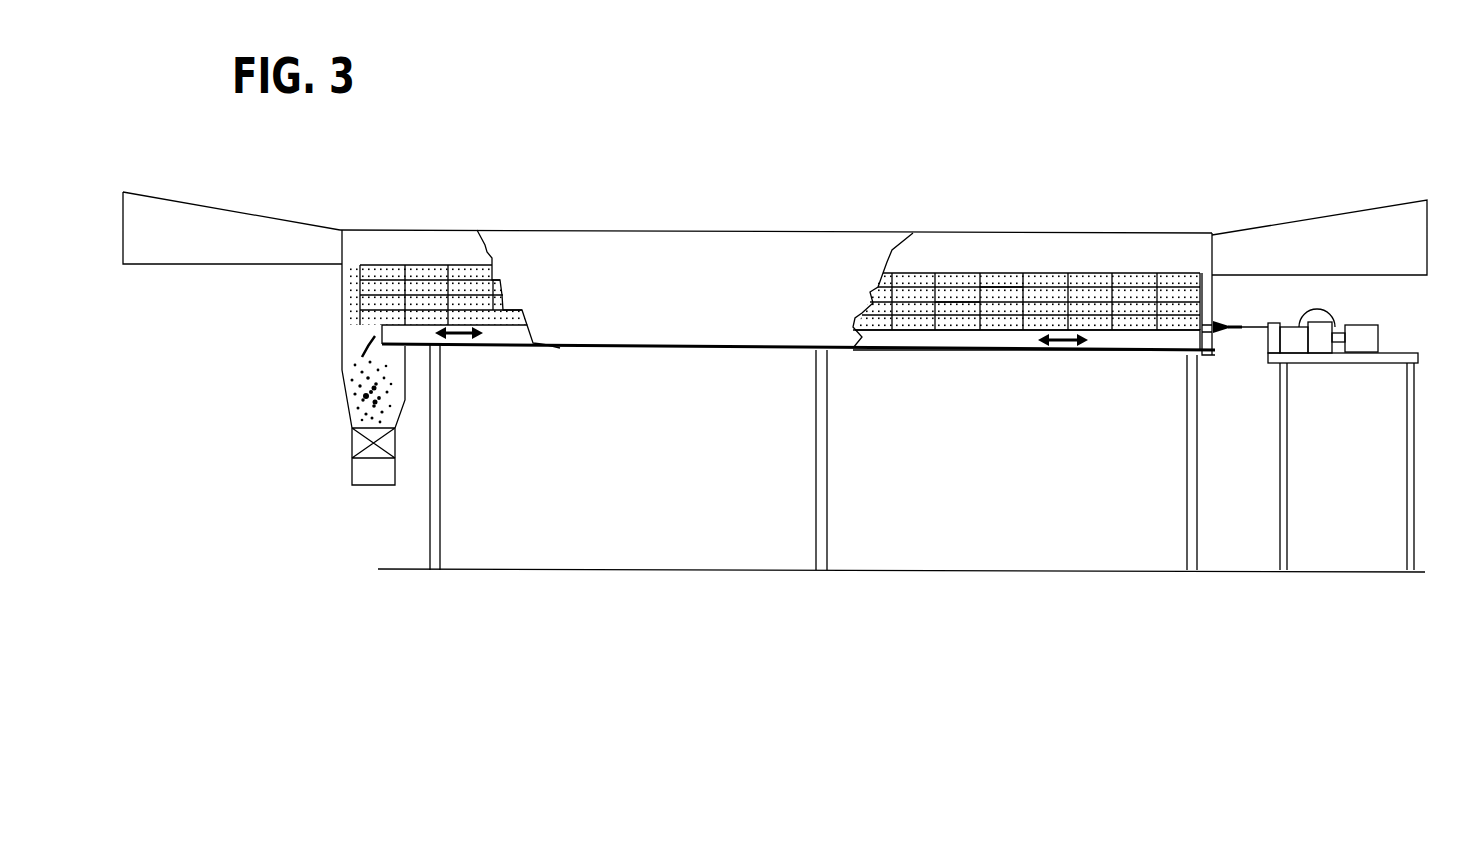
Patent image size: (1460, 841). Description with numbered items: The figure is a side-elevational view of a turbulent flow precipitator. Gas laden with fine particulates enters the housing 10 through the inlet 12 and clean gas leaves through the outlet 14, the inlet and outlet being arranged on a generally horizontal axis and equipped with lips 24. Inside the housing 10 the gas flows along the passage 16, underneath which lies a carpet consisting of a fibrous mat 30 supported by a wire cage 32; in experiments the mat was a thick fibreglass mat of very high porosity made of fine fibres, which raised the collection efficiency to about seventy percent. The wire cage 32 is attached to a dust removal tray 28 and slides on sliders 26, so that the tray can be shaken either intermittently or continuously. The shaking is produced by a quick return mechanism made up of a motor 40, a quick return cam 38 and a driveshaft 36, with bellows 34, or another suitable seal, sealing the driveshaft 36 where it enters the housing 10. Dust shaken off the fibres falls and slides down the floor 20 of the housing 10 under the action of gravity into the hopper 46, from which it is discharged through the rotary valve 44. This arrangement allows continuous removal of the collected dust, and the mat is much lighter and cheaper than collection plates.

The housing 10 is at (656, 215).
The inlet 12 is at (252, 236).
The outlet 14 is at (1372, 235).
The passage 16 is at (968, 253).
The floor 20 is at (486, 358).
The lips 24 is at (343, 284).
The sliders 26 is at (418, 347).
The dust removal tray 28 is at (920, 340).
The fibrous mat 30 is at (992, 290).
The wire cage 32 is at (940, 300).
The bellows 34 is at (1223, 333).
The driveshaft 36 is at (1290, 327).
The quick return cam 38 is at (1310, 313).
The motor 40 is at (1363, 330).
The rotary valve 44 is at (350, 443).
The hopper 46 is at (373, 340).